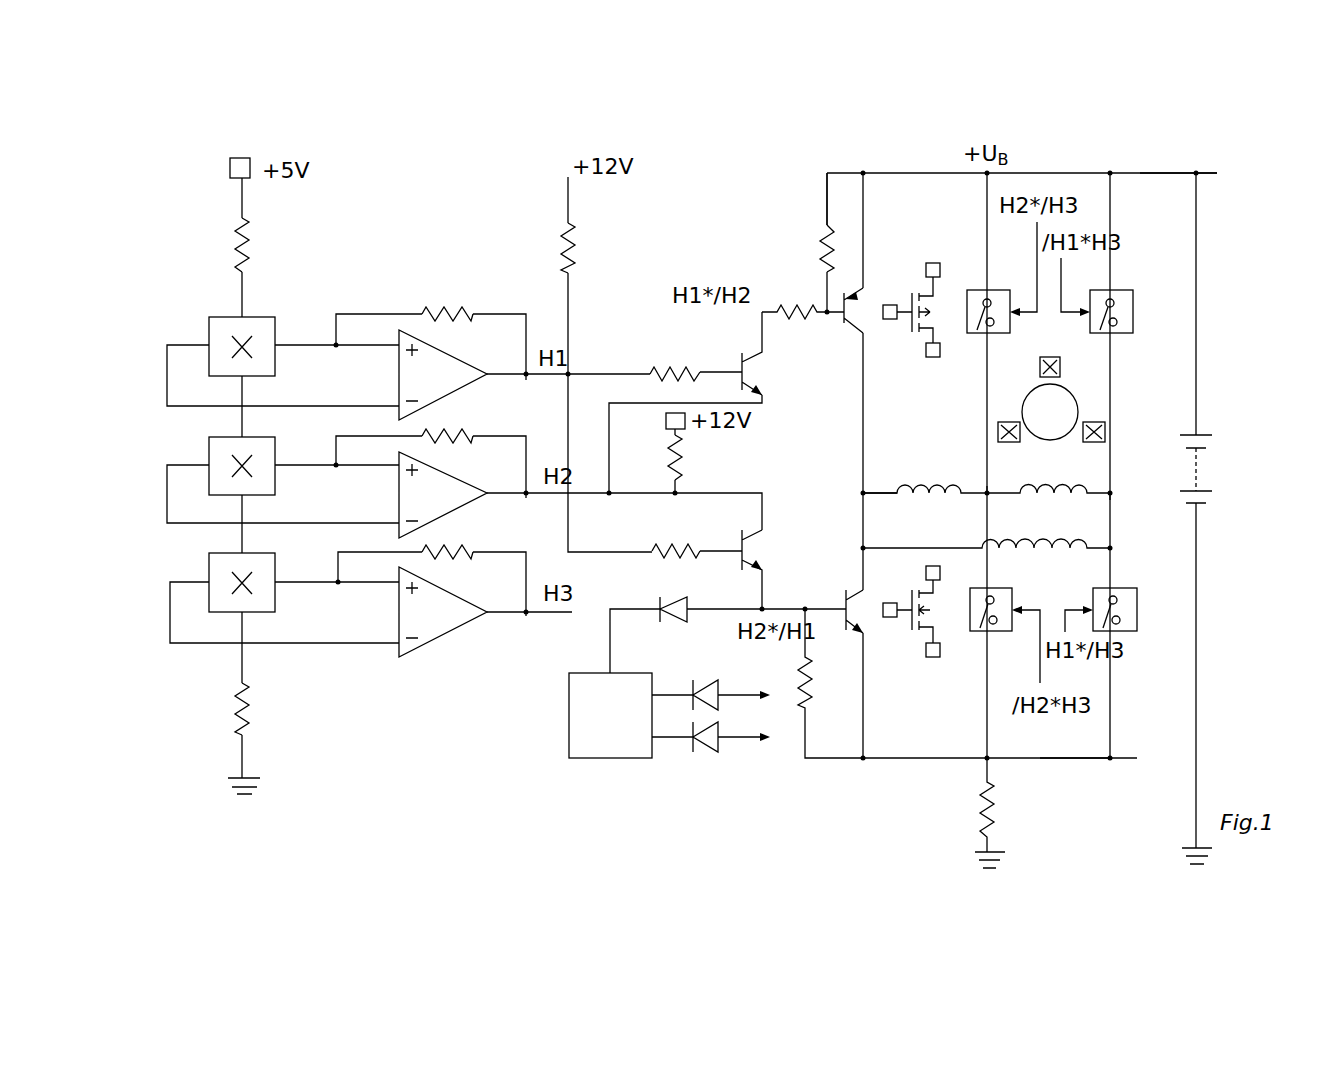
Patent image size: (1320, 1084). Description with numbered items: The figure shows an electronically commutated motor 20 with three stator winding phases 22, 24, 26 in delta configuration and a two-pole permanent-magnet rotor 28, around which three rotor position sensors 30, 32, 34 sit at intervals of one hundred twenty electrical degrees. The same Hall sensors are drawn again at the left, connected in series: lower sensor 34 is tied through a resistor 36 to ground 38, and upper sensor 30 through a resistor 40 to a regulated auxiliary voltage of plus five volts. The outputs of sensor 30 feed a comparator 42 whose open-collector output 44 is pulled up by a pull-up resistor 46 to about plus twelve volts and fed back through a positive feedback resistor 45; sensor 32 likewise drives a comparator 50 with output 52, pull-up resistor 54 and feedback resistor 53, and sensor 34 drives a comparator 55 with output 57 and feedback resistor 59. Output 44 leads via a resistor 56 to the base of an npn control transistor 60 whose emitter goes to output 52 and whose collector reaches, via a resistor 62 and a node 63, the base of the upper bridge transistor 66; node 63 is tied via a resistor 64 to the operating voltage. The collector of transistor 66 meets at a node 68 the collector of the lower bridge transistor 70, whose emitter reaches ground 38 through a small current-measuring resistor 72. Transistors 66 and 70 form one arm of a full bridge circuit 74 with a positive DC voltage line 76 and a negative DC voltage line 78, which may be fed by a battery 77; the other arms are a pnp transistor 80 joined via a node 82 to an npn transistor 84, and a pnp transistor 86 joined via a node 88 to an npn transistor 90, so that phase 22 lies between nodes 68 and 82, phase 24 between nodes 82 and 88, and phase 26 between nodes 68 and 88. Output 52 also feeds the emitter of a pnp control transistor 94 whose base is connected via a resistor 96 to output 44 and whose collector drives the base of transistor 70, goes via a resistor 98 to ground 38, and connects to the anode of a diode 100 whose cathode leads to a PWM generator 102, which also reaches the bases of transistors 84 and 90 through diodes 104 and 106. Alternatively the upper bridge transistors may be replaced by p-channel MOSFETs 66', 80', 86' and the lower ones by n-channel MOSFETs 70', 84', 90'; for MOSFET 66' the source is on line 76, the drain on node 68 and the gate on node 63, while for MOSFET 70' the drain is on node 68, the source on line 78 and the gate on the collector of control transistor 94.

The electronically commutated motor 20 is at (944, 399).
The stator winding phase 22 is at (925, 495).
The stator winding phase 24 is at (1035, 495).
The stator winding phase 26 is at (1058, 546).
The permanent-magnet rotor 28 is at (1068, 392).
The rotor position sensor 30 is at (262, 317).
The rotor position sensor 32 is at (262, 437).
The rotor position sensor 34 is at (262, 553).
The resistor 36 is at (240, 712).
The ground 38 is at (244, 798).
The resistor 40 is at (236, 248).
The comparator 42 is at (443, 375).
The output 44 is at (528, 378).
The positive feedback resistor 45 is at (450, 314).
The pull-up resistor 46 is at (578, 250).
The comparator 50 is at (443, 495).
The output 52 is at (528, 497).
The positive feedback resistor 53 is at (450, 436).
The pull-up resistor 54 is at (672, 456).
The comparator 55 is at (443, 612).
The resistor 56 is at (665, 366).
The output 57 is at (528, 616).
The positive feedback resistor 59 is at (450, 552).
The npn control transistor 60 is at (738, 366).
The resistor 62 is at (797, 322).
The node 63 is at (826, 320).
The resistor 64 is at (820, 245).
The upper bridge transistor 66 is at (850, 335).
The p-channel MOSFET 66' is at (908, 329).
The node 68 is at (860, 490).
The lower bridge transistor 70 is at (830, 588).
The n-channel MOSFET 70' is at (908, 630).
The resistor 72 is at (975, 805).
The full bridge circuit 74 is at (935, 150).
The positive DC voltage line 76 is at (1140, 173).
The battery 77 is at (1188, 468).
The negative DC voltage line 78 is at (1040, 760).
The pnp transistor 80 is at (955, 264).
The p-channel MOSFET 80' is at (970, 264).
The node 82 is at (985, 490).
The npn transistor 84 is at (902, 626).
The n-channel MOSFET 84' is at (1028, 592).
The pnp transistor 86 is at (1146, 282).
The p-channel MOSFET 86' is at (1146, 282).
The node 88 is at (1115, 497).
The npn transistor 90 is at (961, 675).
The n-channel MOSFET 90' is at (1148, 638).
The pnp control transistor 94 is at (748, 572).
The resistor 96 is at (672, 545).
The resistor 98 is at (808, 700).
The diode 100 is at (660, 604).
The PWM generator 102 is at (569, 742).
The diode 104 is at (705, 680).
The diode 106 is at (708, 755).